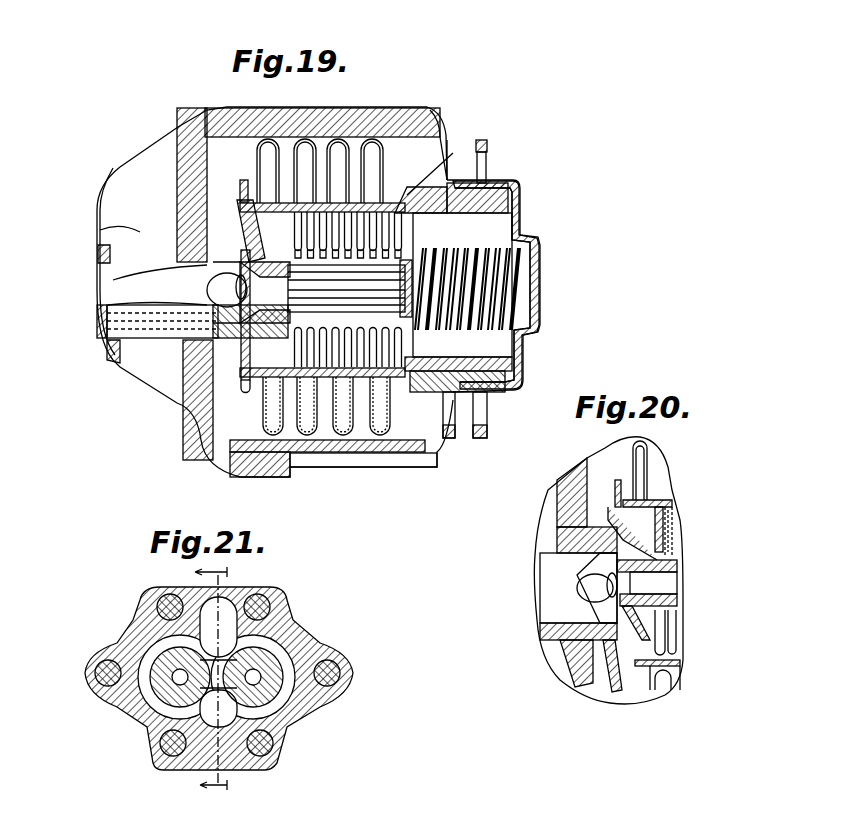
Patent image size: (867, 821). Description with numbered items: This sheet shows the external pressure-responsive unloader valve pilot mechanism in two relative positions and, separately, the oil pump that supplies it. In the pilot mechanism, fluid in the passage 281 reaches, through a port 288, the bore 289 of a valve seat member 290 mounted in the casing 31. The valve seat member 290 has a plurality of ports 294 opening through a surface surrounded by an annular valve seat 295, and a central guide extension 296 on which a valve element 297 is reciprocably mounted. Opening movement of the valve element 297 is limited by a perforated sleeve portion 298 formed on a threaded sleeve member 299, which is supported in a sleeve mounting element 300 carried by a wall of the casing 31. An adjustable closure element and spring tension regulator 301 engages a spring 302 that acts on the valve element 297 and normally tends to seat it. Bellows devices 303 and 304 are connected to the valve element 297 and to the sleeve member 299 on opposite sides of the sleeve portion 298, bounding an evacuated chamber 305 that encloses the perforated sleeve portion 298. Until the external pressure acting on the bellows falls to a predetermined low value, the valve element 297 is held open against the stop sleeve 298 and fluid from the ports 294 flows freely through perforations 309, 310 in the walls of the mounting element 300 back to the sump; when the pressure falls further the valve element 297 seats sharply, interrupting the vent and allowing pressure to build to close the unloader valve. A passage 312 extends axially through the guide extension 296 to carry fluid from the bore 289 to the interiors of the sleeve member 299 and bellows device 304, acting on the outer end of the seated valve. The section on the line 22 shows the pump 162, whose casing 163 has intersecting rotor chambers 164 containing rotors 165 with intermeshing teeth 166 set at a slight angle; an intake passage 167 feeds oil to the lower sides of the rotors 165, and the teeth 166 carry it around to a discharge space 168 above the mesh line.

In FIG. 19, the casing 31 is at (228, 112).
In FIG. 20, the casing 31 is at (557, 673).
In FIG. 19, the passage 281 is at (117, 186).
In FIG. 20, the passage 281 is at (548, 507).
In FIG. 19, the port 288 is at (113, 229).
In FIG. 20, the port 288 is at (545, 546).
In FIG. 19, the bore 289 is at (118, 285).
In FIG. 20, the bore 289 is at (543, 584).
In FIG. 19, the valve seat member 290 is at (120, 318).
In FIG. 20, the valve seat member 290 is at (550, 632).
In FIG. 19, the ports 294 is at (230, 255).
In FIG. 20, the ports 294 is at (610, 560).
In FIG. 19, the annular valve seat 295 is at (247, 237).
In FIG. 20, the annular valve seat 295 is at (613, 673).
In FIG. 19, the guide extension 296 is at (247, 386).
In FIG. 20, the guide extension 296 is at (680, 603).
In FIG. 19, the valve element 297 is at (262, 222).
In FIG. 20, the valve element 297 is at (658, 638).
In FIG. 19, the sleeve portion 298 is at (298, 235).
In FIG. 20, the sleeve portion 298 is at (678, 673).
In FIG. 19, the threaded sleeve member 299 is at (465, 198).
In FIG. 19, the sleeve mounting element 300 is at (432, 122).
In FIG. 19, the adjustable closure element and spring tension regulator 301 is at (513, 184).
In FIG. 19, the spring 302 is at (518, 263).
In FIG. 20, the spring 302 is at (680, 550).
In FIG. 19, the bellows device 303 is at (374, 160).
In FIG. 20, the bellows device 303 is at (633, 460).
In FIG. 19, the bellows device 304 is at (440, 187).
In FIG. 20, the bellows device 304 is at (672, 530).
In FIG. 19, the chamber 305 is at (392, 205).
In FIG. 20, the chamber 305 is at (650, 492).
In FIG. 19, the perforation 309 is at (480, 148).
In FIG. 19, the perforation 310 is at (425, 455).
In FIG. 19, the passage 312 is at (183, 345).
In FIG. 20, the passage 312 is at (668, 583).
In FIG. 21, the pump 162 is at (275, 665).
In FIG. 21, the casing 163 is at (262, 627).
In FIG. 21, the rotor chambers 164 is at (140, 637).
In FIG. 21, the rotors 165 is at (157, 717).
In FIG. 21, the intermeshing teeth 166 is at (167, 722).
In FIG. 21, the intake passage 167 is at (240, 768).
In FIG. 21, the discharge space 168 is at (227, 618).
In FIG. 21, the section line 22 is at (195, 680).